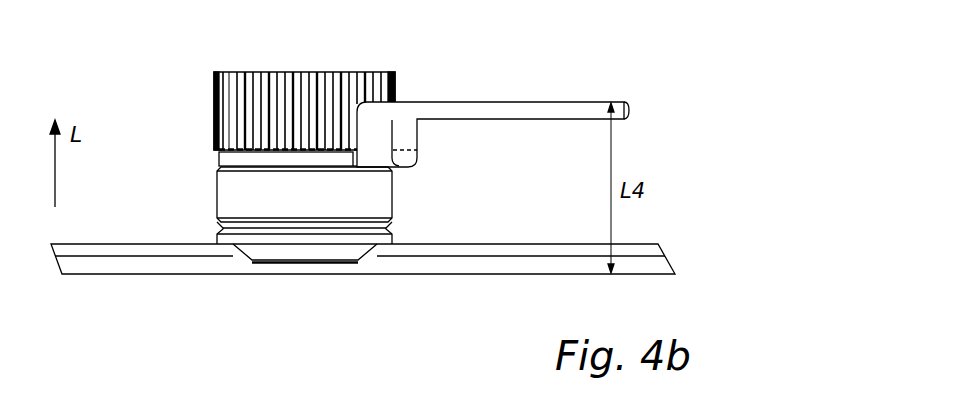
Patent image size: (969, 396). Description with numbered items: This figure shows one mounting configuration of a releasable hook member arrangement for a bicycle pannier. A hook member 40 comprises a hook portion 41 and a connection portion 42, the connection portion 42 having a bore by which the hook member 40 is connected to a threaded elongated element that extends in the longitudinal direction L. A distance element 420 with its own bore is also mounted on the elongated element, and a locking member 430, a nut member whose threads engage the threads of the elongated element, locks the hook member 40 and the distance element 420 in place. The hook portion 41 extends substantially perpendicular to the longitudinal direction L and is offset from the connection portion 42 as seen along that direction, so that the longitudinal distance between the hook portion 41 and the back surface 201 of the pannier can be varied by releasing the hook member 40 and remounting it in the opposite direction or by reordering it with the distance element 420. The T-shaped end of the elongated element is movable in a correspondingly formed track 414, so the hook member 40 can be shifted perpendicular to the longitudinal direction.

The locking member 430 is at (393, 90).
The connection portion 42 is at (217, 153).
The hook member 40 is at (428, 120).
The hook portion 41 is at (629, 115).
The distance element 420 is at (227, 200).
The track 414 is at (452, 265).
The back surface 201 is at (622, 275).